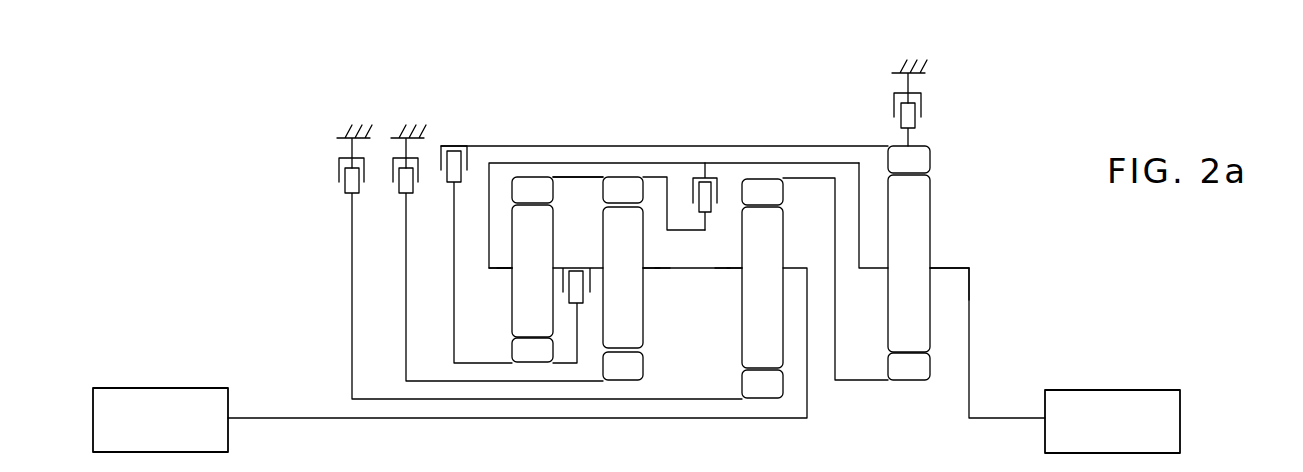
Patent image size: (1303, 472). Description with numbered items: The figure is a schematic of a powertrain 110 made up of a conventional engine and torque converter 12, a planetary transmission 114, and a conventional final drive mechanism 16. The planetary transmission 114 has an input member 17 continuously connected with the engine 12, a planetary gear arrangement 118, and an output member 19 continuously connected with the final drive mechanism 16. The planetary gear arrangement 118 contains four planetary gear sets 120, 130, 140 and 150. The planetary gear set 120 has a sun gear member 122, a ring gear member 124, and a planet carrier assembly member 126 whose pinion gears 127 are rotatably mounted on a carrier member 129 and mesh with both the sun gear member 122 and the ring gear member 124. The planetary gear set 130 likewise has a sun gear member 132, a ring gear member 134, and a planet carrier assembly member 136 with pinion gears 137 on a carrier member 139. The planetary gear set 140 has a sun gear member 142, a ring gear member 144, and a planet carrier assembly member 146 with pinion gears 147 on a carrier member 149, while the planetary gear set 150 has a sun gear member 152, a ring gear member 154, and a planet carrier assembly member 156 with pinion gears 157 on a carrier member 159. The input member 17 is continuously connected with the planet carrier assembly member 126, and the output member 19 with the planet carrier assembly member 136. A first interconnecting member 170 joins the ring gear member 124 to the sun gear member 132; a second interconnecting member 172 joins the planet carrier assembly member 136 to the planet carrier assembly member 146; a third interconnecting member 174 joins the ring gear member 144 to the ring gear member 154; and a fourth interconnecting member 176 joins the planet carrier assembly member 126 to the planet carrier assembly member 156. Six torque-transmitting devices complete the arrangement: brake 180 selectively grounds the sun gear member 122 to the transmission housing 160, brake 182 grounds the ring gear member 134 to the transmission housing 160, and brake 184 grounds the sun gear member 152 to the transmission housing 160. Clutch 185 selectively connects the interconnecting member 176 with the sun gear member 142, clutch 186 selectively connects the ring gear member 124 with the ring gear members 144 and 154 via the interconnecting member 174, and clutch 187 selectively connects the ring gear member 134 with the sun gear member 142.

The engine and torque converter 12 is at (147, 362).
The final drive mechanism 16 is at (1127, 365).
The input member 17 is at (282, 417).
The output member 19 is at (995, 417).
The powertrain 110 is at (528, 84).
The planetary transmission 114 is at (641, 97).
The planetary gear arrangement 118 is at (756, 95).
The planetary gear set 120 is at (750, 319).
The sun gear member 122 is at (778, 394).
The ring gear member 124 is at (778, 202).
The planet carrier assembly member 126 is at (737, 283).
The pinion gears 127 is at (778, 294).
The carrier member 129 is at (720, 270).
The planetary gear set 130 is at (911, 303).
The sun gear member 132 is at (909, 366).
The ring gear member 134 is at (894, 169).
The planet carrier assembly member 136 is at (939, 248).
The pinion gears 137 is at (894, 268).
The carrier member 139 is at (952, 268).
The planetary gear set 140 is at (521, 318).
The sun gear member 142 is at (548, 360).
The ring gear member 144 is at (548, 200).
The planet carrier assembly member 146 is at (502, 283).
The pinion gears 147 is at (548, 260).
The carrier member 149 is at (497, 270).
The planetary gear set 150 is at (657, 318).
The sun gear member 152 is at (608, 376).
The ring gear member 154 is at (608, 200).
The planet carrier assembly member 156 is at (651, 283).
The pinion gears 157 is at (608, 276).
The carrier member 159 is at (660, 269).
The transmission housing 160 is at (338, 137).
The first interconnecting member 170 is at (836, 339).
The second interconnecting member 172 is at (858, 233).
The third interconnecting member 174 is at (573, 177).
The fourth interconnecting member 176 is at (683, 267).
The brake 180 is at (337, 203).
The brake 182 is at (933, 132).
The brake 184 is at (390, 203).
The clutch 185 is at (580, 255).
The clutch 186 is at (706, 162).
The clutch 187 is at (459, 128).